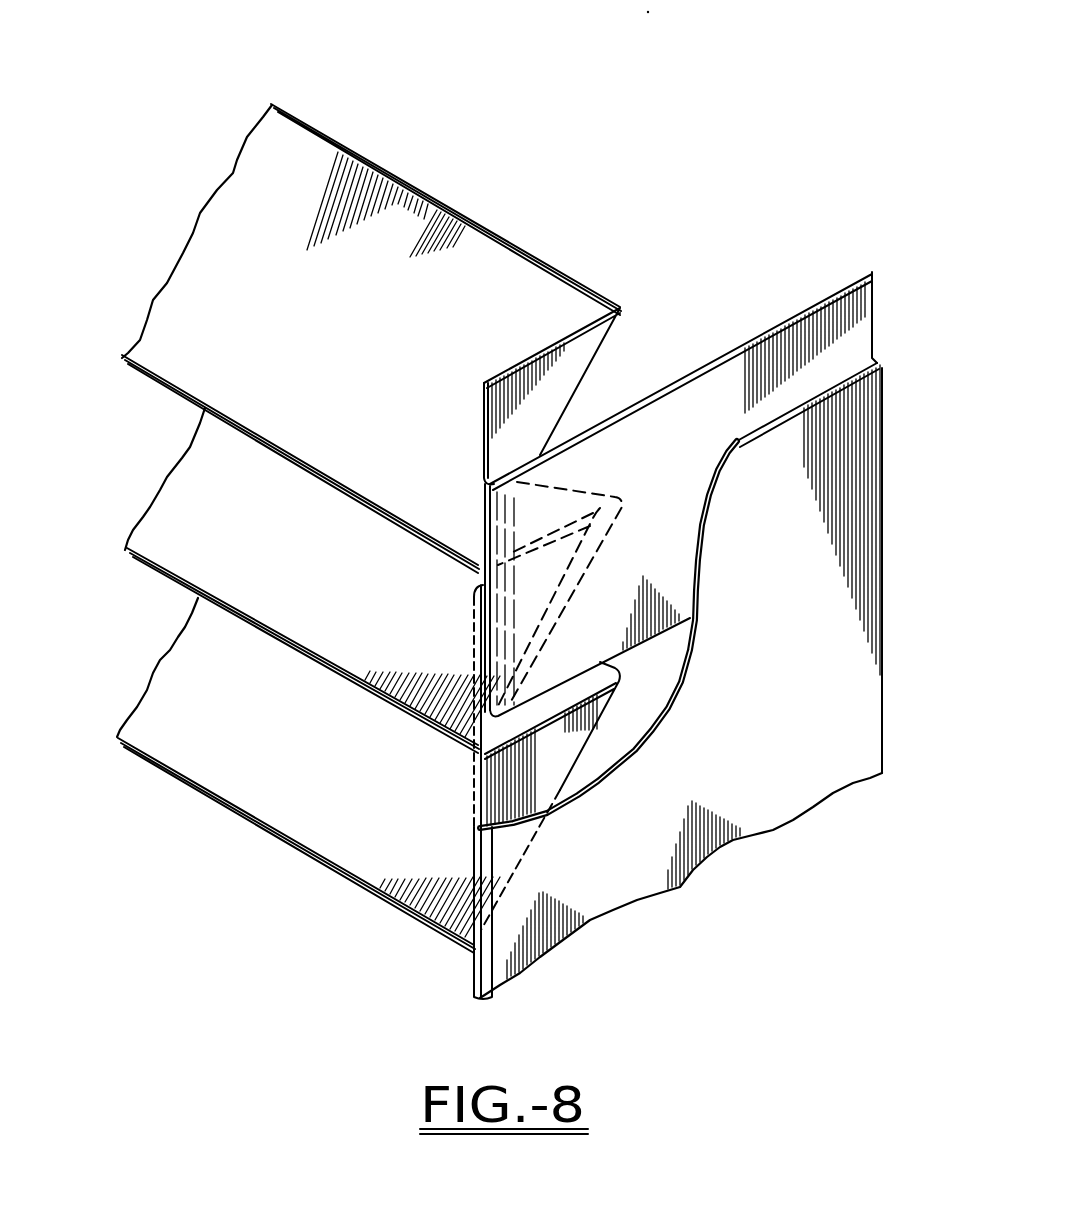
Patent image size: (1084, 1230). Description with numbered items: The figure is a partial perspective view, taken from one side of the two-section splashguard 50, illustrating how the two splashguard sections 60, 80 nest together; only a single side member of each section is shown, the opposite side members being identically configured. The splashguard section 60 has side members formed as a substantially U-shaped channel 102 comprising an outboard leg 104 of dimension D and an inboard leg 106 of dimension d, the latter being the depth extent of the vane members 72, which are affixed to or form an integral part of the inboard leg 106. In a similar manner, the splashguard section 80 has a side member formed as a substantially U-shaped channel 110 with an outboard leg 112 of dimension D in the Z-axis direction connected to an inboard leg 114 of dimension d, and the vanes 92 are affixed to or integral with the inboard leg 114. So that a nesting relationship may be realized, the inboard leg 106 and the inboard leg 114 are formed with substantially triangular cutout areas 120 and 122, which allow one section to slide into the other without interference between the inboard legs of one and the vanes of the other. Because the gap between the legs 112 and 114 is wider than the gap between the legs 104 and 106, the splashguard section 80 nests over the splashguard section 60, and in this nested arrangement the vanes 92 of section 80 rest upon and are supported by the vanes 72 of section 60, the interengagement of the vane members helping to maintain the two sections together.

The corner protector assembly 50 is at (458, 170).
The splashguard section 60 is at (534, 249).
The vane member 72 is at (230, 262).
The vane 92 is at (224, 480).
The splashguard section 80 is at (253, 824).
The U-shaped channel 102 is at (476, 454).
The inboard leg 106 is at (537, 352).
The outboard leg 104 is at (815, 307).
The triangular cutout area 120 is at (608, 391).
The triangular cutout area 122 is at (604, 744).
The outboard leg 112 is at (786, 774).
The inboard leg 114 is at (535, 768).
The U-shaped channel 110 is at (466, 955).